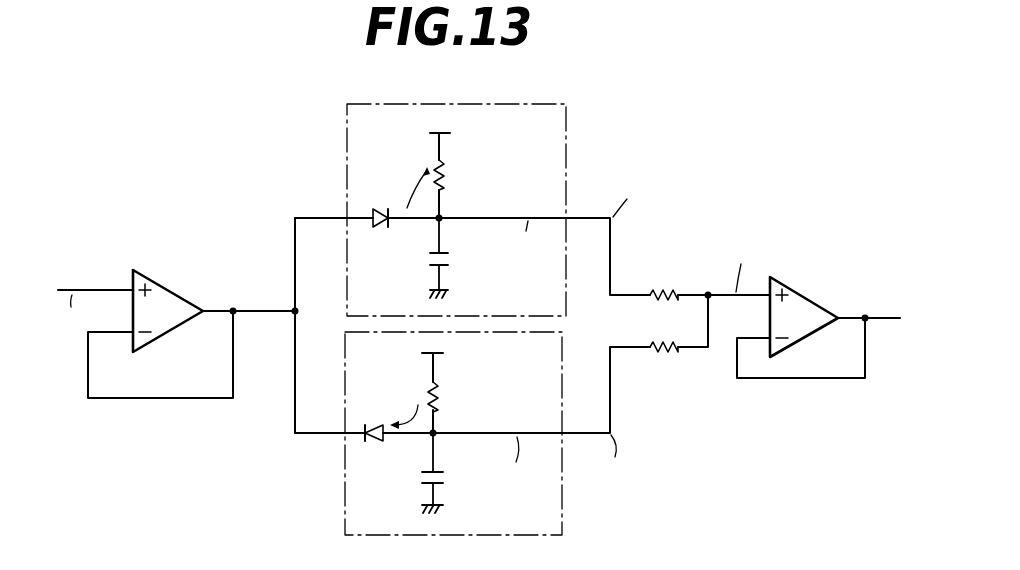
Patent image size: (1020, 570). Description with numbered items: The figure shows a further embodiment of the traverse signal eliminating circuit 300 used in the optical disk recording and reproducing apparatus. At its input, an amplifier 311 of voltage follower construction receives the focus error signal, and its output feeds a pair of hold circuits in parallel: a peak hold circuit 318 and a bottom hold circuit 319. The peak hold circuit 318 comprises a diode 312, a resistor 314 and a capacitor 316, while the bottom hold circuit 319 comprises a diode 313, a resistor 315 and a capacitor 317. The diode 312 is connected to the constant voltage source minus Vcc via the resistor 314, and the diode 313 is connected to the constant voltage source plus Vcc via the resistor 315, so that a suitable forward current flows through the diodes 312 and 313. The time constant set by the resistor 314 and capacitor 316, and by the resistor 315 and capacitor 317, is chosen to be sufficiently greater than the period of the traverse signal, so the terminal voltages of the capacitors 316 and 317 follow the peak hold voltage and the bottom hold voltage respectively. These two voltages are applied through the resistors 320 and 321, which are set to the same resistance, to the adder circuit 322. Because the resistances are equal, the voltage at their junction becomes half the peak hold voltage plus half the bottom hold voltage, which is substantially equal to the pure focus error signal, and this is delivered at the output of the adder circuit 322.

The traverse signal eliminating circuit 300 is at (707, 482).
The amplifier 311 is at (165, 288).
The diode 312 is at (378, 211).
The diode 313 is at (374, 454).
The resistor 314 is at (447, 190).
The resistor 315 is at (440, 408).
The capacitor 316 is at (465, 258).
The capacitor 317 is at (445, 481).
The peak hold circuit 318 is at (572, 118).
The bottom hold circuit 319 is at (562, 523).
The resistor 320 is at (670, 291).
The resistor 321 is at (667, 354).
The adder circuit 322 is at (817, 304).